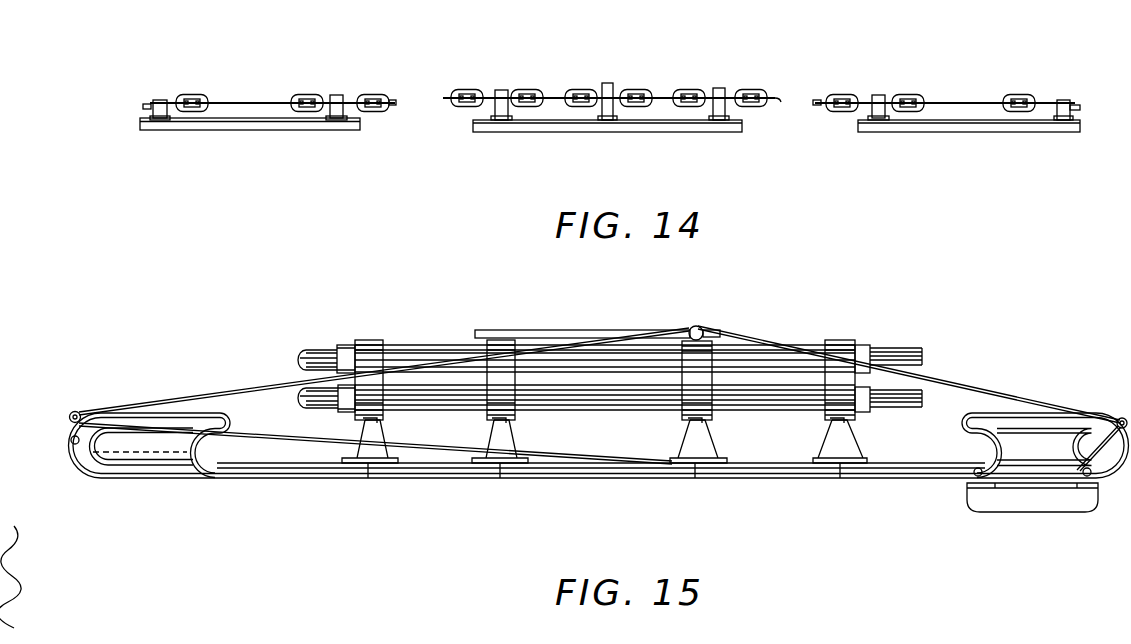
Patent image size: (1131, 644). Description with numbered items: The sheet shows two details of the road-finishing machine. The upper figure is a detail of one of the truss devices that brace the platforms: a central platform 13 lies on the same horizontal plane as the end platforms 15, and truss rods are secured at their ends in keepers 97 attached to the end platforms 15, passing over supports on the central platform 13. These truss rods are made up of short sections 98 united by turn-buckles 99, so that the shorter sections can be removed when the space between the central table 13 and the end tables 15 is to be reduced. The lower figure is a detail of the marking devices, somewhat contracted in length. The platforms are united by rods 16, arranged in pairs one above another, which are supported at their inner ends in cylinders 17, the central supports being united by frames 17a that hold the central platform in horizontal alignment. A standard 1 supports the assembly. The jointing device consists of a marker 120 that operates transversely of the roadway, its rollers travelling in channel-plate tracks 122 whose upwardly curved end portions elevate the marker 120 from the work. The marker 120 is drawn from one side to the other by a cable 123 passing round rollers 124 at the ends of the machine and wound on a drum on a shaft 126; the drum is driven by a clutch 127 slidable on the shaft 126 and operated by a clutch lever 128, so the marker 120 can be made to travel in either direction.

In FIG. 15, the standard 1 is at (380, 452).
In FIG. 14, the central platform 13 is at (567, 132).
In FIG. 14, the end platform 15 is at (173, 130).
In FIG. 15, the rod 16 is at (323, 350).
In FIG. 15, the cylinder 17 is at (787, 400).
In FIG. 15, the frame 17a is at (368, 352).
In FIG. 14, the keeper 97 is at (162, 100).
In FIG. 14, the short section 98 is at (247, 104).
In FIG. 14, the turn-buckle 99 is at (375, 112).
In FIG. 15, the marker 120 is at (80, 474).
In FIG. 15, the channel-plate track 122 is at (282, 470).
In FIG. 15, the cable 123 is at (238, 388).
In FIG. 15, the roller 124 is at (78, 412).
In FIG. 15, the shaft 126 is at (695, 326).
In FIG. 15, the clutch 127 is at (608, 477).
In FIG. 15, the clutch lever 128 is at (507, 438).